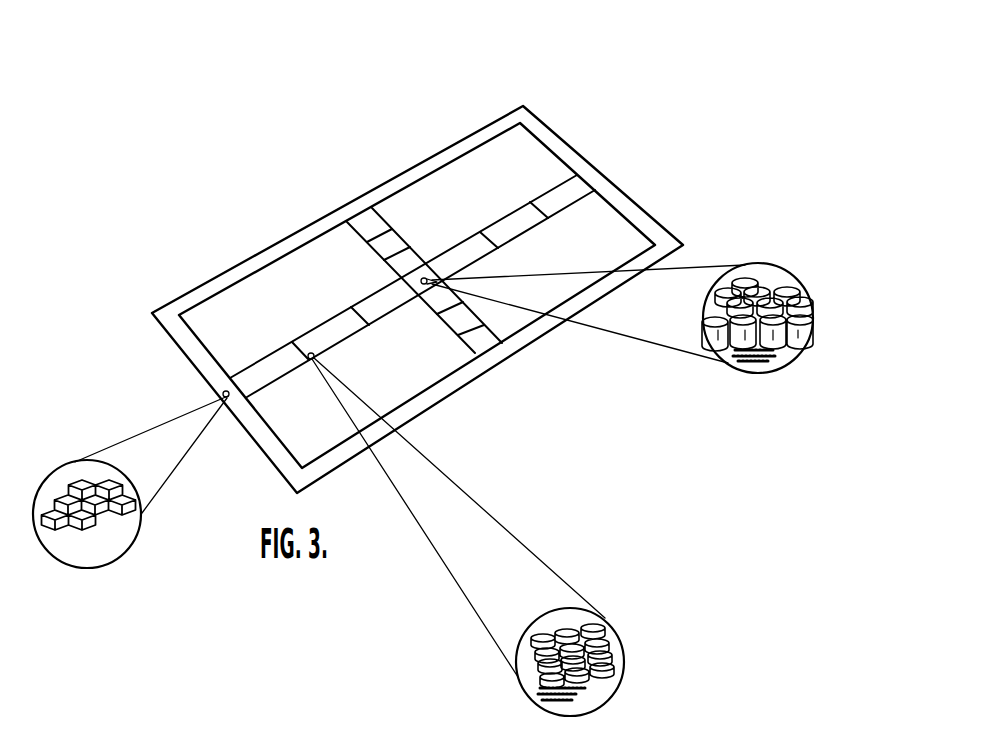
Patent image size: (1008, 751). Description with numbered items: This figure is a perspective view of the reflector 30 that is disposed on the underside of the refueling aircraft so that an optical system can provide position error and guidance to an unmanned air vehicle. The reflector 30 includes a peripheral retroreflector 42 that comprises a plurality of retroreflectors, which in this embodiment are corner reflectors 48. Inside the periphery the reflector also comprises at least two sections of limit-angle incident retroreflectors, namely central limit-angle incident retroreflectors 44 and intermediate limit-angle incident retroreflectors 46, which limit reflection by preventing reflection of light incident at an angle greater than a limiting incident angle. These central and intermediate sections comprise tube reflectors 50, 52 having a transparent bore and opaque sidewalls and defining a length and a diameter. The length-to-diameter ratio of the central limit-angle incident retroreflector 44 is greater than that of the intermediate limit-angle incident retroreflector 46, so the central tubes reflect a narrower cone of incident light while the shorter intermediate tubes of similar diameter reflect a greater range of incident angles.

The reflector 30 is at (632, 116).
The peripheral retroreflector 42 is at (239, 272).
The central limit-angle incident retroreflector 44 is at (427, 272).
The intermediate limit-angle incident retroreflector 46 is at (314, 336).
The corner reflector 48 is at (55, 475).
The tube reflector 50 is at (782, 270).
The tube reflector 52 is at (612, 627).